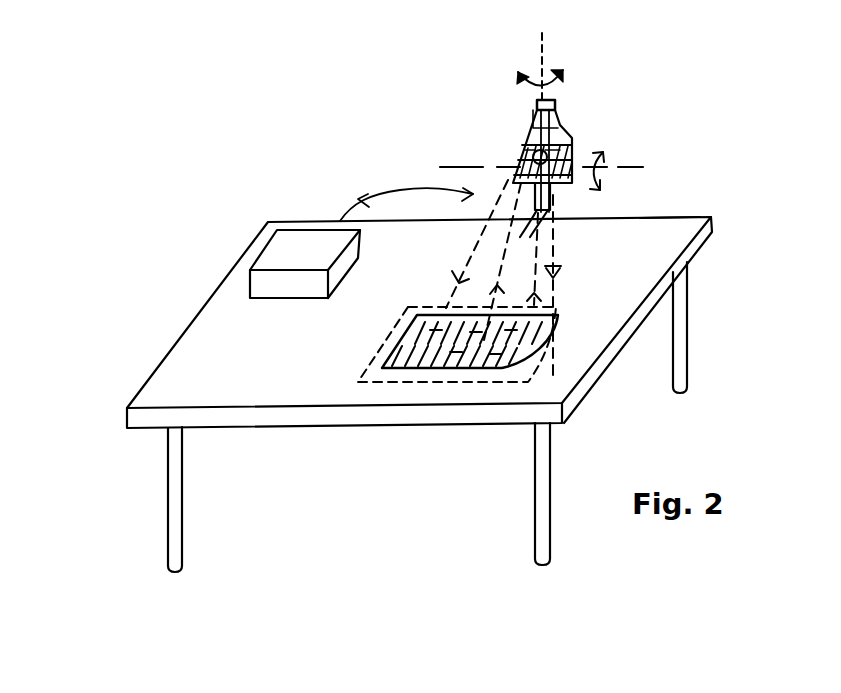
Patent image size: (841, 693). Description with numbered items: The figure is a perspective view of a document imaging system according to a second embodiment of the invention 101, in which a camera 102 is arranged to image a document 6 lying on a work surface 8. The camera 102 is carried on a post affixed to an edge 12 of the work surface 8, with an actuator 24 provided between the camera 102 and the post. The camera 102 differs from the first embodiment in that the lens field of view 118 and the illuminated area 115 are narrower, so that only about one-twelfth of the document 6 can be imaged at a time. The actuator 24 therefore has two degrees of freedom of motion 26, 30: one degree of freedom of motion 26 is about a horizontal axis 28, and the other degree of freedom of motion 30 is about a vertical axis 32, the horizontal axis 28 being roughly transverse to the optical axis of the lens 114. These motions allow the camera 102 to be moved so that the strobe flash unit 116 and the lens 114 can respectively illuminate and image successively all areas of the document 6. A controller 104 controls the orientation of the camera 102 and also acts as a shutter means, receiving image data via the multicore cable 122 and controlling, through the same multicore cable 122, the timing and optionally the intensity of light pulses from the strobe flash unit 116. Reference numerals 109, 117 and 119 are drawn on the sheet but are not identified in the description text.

The second embodiment of the invention 101 is at (178, 256).
The controller 104 is at (297, 242).
The multicore cable 122 is at (406, 191).
The vertical axis 32 is at (542, 38).
The degree of freedom of motion 30 is at (516, 82).
The horizontal axis 28 is at (533, 145).
The strobe flash unit 116 is at (557, 108).
The camera 102 is at (585, 120).
The lens 114 is at (575, 130).
The actuator 24 is at (585, 145).
The degree of freedom of motion 26 is at (600, 175).
The edge 12 is at (647, 217).
The nozzle 109 is at (553, 200).
The work surface 8 is at (653, 257).
The spray paths 119 is at (548, 288).
The coated region 117 is at (553, 308).
The document 6 is at (555, 323).
The illuminated area 115 is at (437, 383).
The lens field of view 118 is at (520, 370).